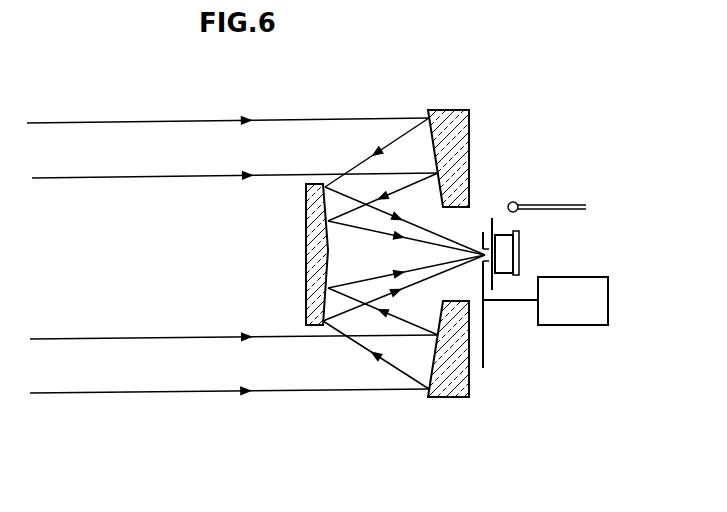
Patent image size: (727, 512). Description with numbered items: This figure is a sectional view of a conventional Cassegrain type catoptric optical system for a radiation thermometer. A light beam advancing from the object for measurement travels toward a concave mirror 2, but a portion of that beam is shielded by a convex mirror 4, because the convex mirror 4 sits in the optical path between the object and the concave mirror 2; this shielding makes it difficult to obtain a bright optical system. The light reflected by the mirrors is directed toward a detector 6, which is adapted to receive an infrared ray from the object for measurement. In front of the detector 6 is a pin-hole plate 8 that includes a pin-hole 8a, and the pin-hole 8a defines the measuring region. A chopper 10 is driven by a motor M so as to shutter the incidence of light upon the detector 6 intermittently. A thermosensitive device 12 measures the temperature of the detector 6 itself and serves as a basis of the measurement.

The concave mirror 2 is at (452, 109).
The convex mirror 4 is at (306, 250).
The detector 6 is at (503, 263).
The pin-hole plate 8 is at (492, 222).
The pin-hole 8a is at (483, 249).
The chopper 10 is at (483, 358).
The thermosensitive device 12 is at (516, 200).
The motor M is at (575, 315).